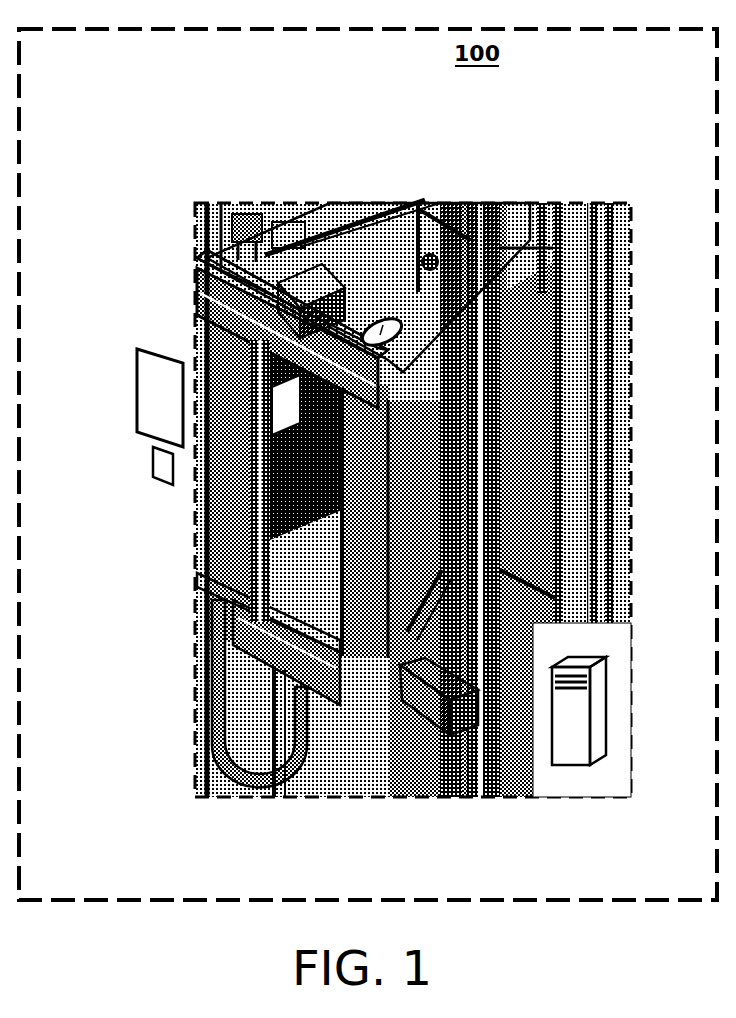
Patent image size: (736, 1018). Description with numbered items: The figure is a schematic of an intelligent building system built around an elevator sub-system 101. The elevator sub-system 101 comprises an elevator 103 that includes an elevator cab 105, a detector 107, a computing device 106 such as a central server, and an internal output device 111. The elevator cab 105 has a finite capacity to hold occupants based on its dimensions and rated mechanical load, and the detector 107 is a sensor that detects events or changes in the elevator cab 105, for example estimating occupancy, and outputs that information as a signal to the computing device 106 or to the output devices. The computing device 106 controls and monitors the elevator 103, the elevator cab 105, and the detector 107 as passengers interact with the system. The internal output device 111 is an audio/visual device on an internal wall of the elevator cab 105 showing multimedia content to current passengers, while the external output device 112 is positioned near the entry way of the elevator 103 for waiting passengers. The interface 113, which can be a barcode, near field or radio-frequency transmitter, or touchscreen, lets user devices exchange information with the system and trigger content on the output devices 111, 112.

The elevator sub-system 101 is at (192, 235).
The elevator 103 is at (215, 284).
The elevator cab 105 is at (299, 549).
The computing device 106 is at (580, 767).
The detector 107 is at (382, 328).
The internal output device 111 is at (262, 461).
The external output device 112 is at (137, 378).
The interface 113 is at (153, 472).